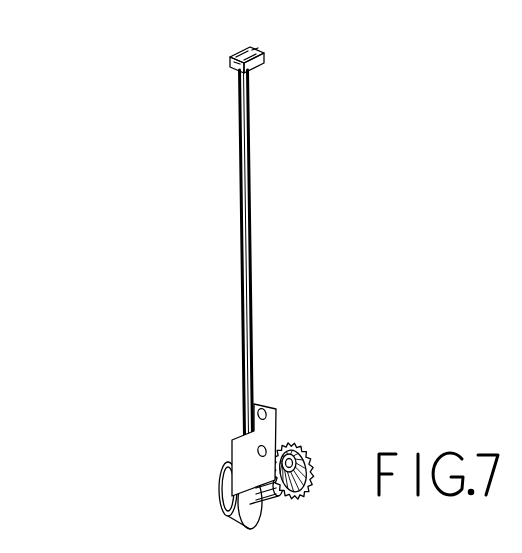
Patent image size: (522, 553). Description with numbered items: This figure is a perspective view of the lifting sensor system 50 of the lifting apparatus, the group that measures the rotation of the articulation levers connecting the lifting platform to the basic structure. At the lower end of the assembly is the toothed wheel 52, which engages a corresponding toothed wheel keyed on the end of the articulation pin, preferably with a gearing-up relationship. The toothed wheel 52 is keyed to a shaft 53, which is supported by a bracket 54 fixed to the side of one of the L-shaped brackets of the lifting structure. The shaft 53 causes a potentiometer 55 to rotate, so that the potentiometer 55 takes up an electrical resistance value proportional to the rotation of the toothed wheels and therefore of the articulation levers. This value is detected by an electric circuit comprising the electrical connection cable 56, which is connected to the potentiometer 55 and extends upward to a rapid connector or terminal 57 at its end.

The lifting sensor system 50 is at (309, 406).
The toothed wheel 52 is at (313, 483).
The shaft 53 is at (271, 502).
The bracket 54 is at (276, 409).
The potentiometer 55 is at (234, 513).
The electrical connection cable 56 is at (240, 262).
The rapid connector or terminal 57 is at (253, 72).